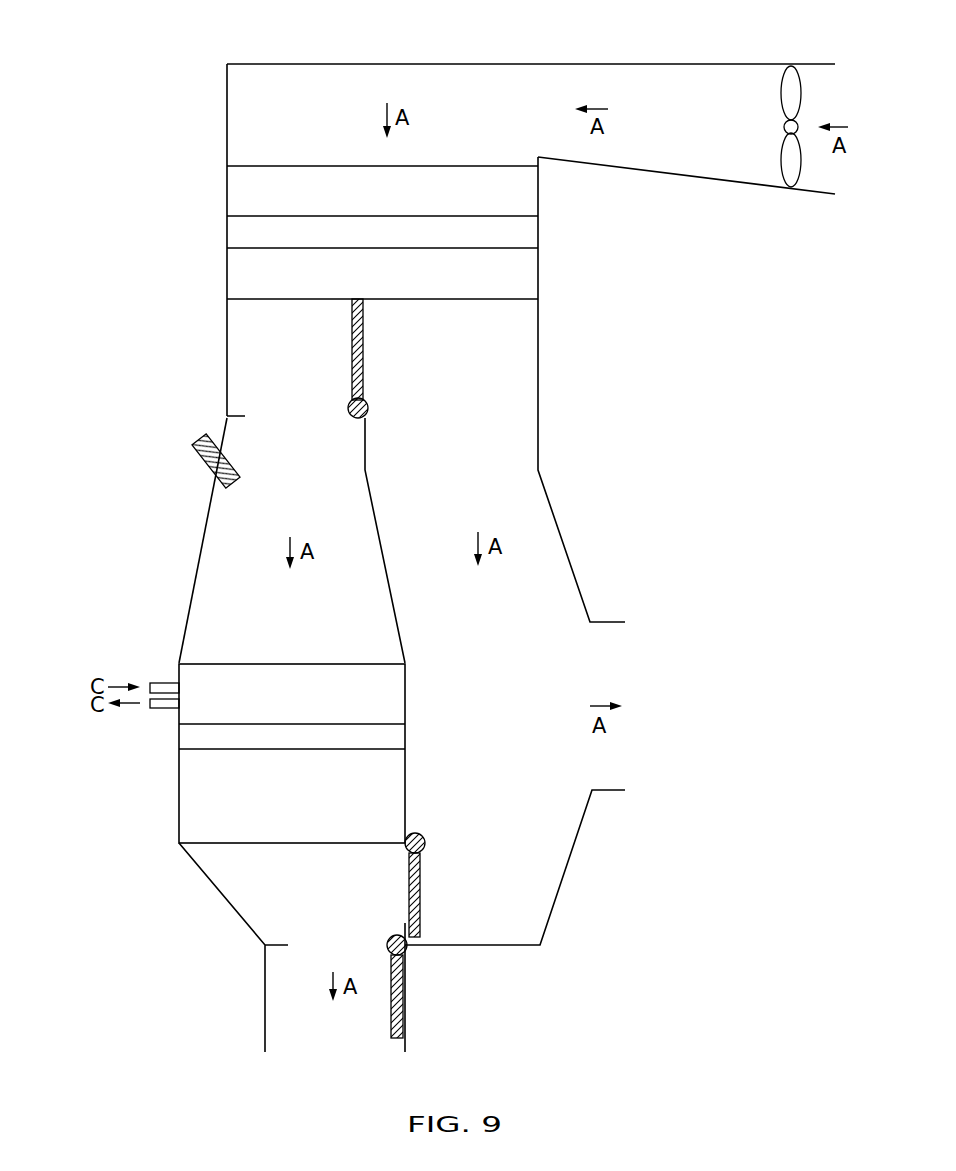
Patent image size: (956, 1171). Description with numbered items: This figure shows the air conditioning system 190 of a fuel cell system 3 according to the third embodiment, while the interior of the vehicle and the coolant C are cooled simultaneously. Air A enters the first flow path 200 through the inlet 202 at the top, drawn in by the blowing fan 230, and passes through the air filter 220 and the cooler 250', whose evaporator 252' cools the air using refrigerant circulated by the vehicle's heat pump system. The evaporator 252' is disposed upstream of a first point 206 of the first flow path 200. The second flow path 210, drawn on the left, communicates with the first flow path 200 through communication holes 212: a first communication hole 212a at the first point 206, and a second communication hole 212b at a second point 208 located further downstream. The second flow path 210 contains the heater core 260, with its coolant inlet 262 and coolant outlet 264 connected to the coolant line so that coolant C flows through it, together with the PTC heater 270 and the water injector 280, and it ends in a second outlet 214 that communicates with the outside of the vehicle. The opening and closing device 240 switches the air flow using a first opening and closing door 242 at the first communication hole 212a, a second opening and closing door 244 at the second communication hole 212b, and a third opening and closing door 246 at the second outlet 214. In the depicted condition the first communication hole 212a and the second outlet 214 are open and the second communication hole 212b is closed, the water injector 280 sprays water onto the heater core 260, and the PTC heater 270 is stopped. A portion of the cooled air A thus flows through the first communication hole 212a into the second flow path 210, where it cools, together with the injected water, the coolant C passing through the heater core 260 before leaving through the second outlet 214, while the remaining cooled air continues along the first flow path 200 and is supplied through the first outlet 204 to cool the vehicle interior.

The fuel cell system 3 is at (66, 63).
The air conditioning system 190 is at (208, 185).
The first flow path 200 is at (472, 366).
The inlet 202 is at (531, 64).
The first outlet 204 is at (610, 622).
The first point 206 is at (228, 420).
The second point 208 is at (405, 945).
The second flow path 210 is at (310, 629).
The communication holes 212 is at (262, 436).
The first communication hole 212a is at (338, 456).
The second communication hole 212b is at (397, 922).
The second outlet 214 is at (265, 998).
The air filter 220 is at (523, 190).
The blowing fan 230 is at (783, 165).
The opening and closing device 240 is at (273, 668).
The first opening and closing door 242 is at (352, 351).
The second opening and closing door 244 is at (422, 893).
The third opening and closing door 246 is at (404, 1020).
The cooler 250' is at (440, 248).
The evaporator 252' is at (423, 279).
The heater core 260 is at (200, 713).
The coolant inlet 262 is at (150, 685).
The coolant outlet 264 is at (150, 706).
The PTC heater 270 is at (200, 815).
The water injector 280 is at (207, 470).